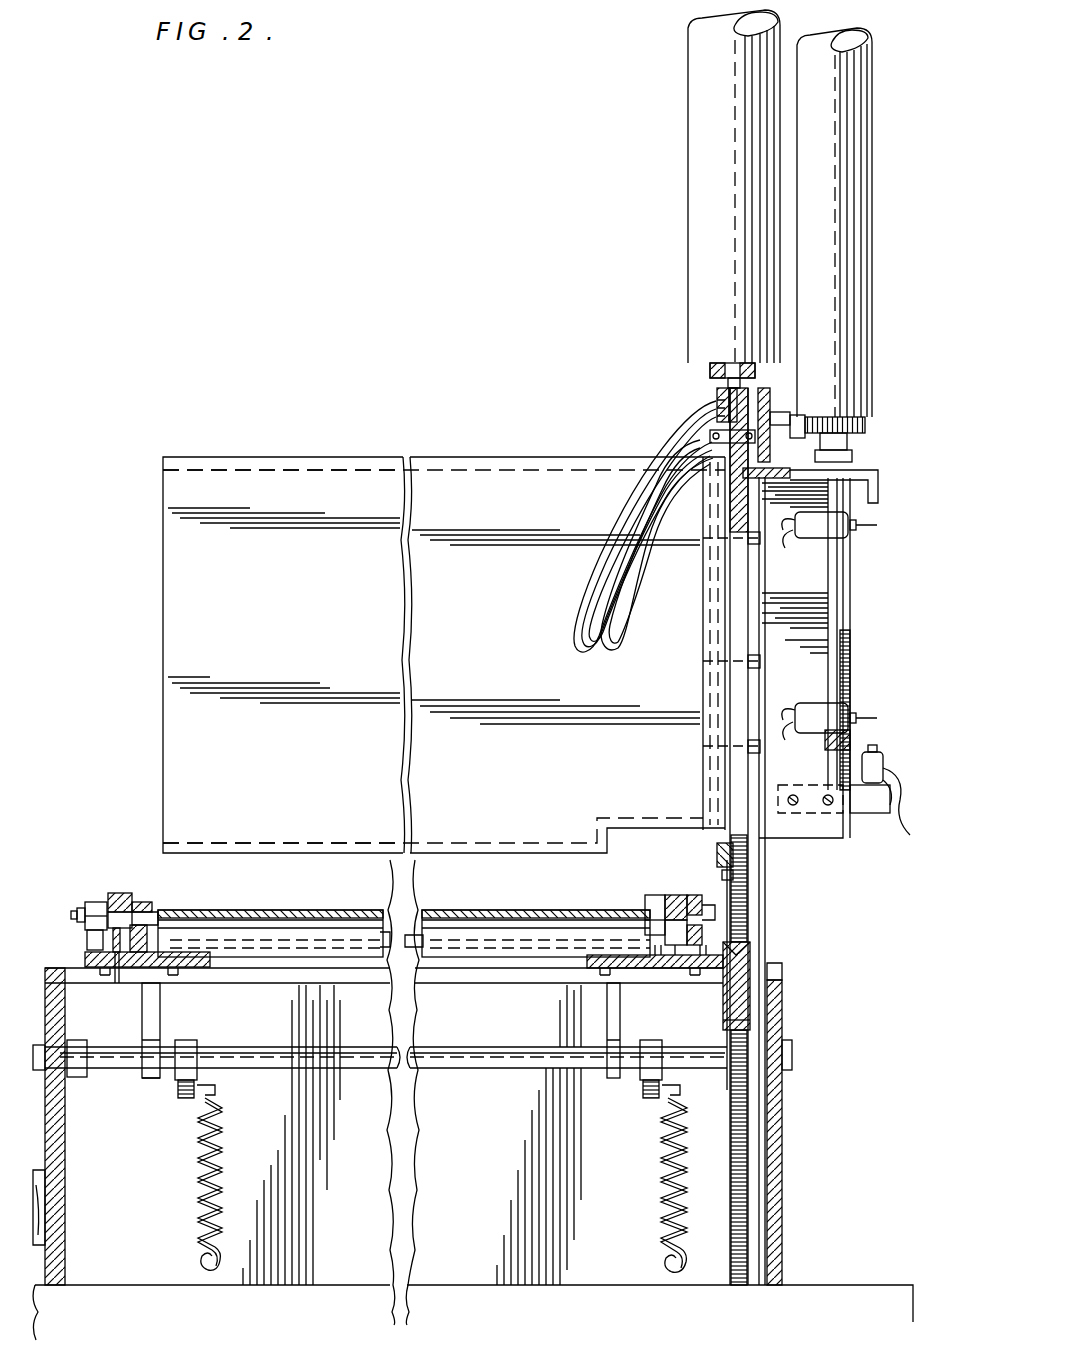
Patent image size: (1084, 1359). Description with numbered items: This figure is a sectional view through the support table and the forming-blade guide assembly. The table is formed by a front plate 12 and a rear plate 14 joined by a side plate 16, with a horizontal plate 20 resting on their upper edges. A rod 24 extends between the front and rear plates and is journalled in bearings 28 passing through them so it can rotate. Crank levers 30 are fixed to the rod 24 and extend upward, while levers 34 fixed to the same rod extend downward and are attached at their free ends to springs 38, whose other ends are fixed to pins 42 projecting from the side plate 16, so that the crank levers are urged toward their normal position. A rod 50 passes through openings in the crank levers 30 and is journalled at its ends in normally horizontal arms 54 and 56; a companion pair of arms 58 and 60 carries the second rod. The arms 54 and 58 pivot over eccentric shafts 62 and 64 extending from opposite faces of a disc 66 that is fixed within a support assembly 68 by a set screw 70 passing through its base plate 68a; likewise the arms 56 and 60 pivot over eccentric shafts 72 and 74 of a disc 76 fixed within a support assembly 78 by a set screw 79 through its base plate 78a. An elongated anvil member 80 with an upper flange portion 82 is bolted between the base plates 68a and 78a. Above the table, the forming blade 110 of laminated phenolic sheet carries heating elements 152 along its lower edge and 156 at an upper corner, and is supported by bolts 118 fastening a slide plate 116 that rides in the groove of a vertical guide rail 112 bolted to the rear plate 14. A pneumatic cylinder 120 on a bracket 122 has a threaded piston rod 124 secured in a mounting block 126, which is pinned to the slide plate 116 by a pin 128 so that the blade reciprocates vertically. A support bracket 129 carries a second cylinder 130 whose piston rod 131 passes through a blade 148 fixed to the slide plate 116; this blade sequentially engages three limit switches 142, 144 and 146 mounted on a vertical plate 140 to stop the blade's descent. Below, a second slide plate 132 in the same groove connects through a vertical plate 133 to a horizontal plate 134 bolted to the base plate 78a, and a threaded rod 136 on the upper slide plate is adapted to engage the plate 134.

The front plate 12 is at (60, 1122).
The rear plate 14 is at (780, 1168).
The side plate 16 is at (498, 1158).
The horizontal plate 20 is at (295, 975).
The rod 24 is at (345, 1070).
The bearings 28 is at (72, 1040).
The crank levers 30 is at (160, 1025).
The levers 34 is at (178, 1090).
The springs 38 is at (222, 1195).
The pins 42 is at (200, 1262).
The rod 50 is at (410, 930).
The arm 54 is at (95, 902).
The arm 56 is at (655, 895).
The arm 58 is at (143, 902).
The arm 60 is at (690, 900).
The eccentric shaft 62 is at (77, 912).
The eccentric shaft 64 is at (160, 912).
The disc 66 is at (125, 893).
The support assembly 68 is at (88, 956).
The base plate 68a is at (205, 968).
The set screw 70 is at (117, 968).
The eccentric shaft 72 is at (690, 895).
The eccentric shaft 74 is at (712, 912).
The disc 76 is at (668, 900).
The support assembly 78 is at (730, 960).
The base plate 78a is at (625, 968).
The set screw 79 is at (700, 968).
The anvil member 80 is at (505, 957).
The flange portion 82 is at (552, 898).
The forming blade 110 is at (495, 640).
The guide rail 112 is at (750, 893).
The slide plate 116 is at (712, 450).
The bolts 118 is at (760, 545).
The pneumatically operated cylinder 120 is at (705, 140).
The bracket 122 is at (718, 366).
The threaded piston rod 124 is at (720, 392).
The mounting block 126 is at (717, 404).
The pin 128 is at (710, 436).
The support bracket 129 is at (785, 415).
The pneumatically operated cylinder 130 is at (834, 222).
The piston rod 131 is at (845, 630).
The slide plate 132 is at (752, 978).
The vertical plate 133 is at (740, 1012).
The horizontal plate 134 is at (712, 968).
The threaded rod 136 is at (750, 872).
The vertically extending plate 140 is at (842, 835).
The limit switch 142 is at (845, 540).
The limit switch 144 is at (845, 712).
The limit switch 146 is at (875, 760).
The blade 148 is at (870, 492).
The heating element 152 is at (245, 843).
The heating element 156 is at (288, 468).